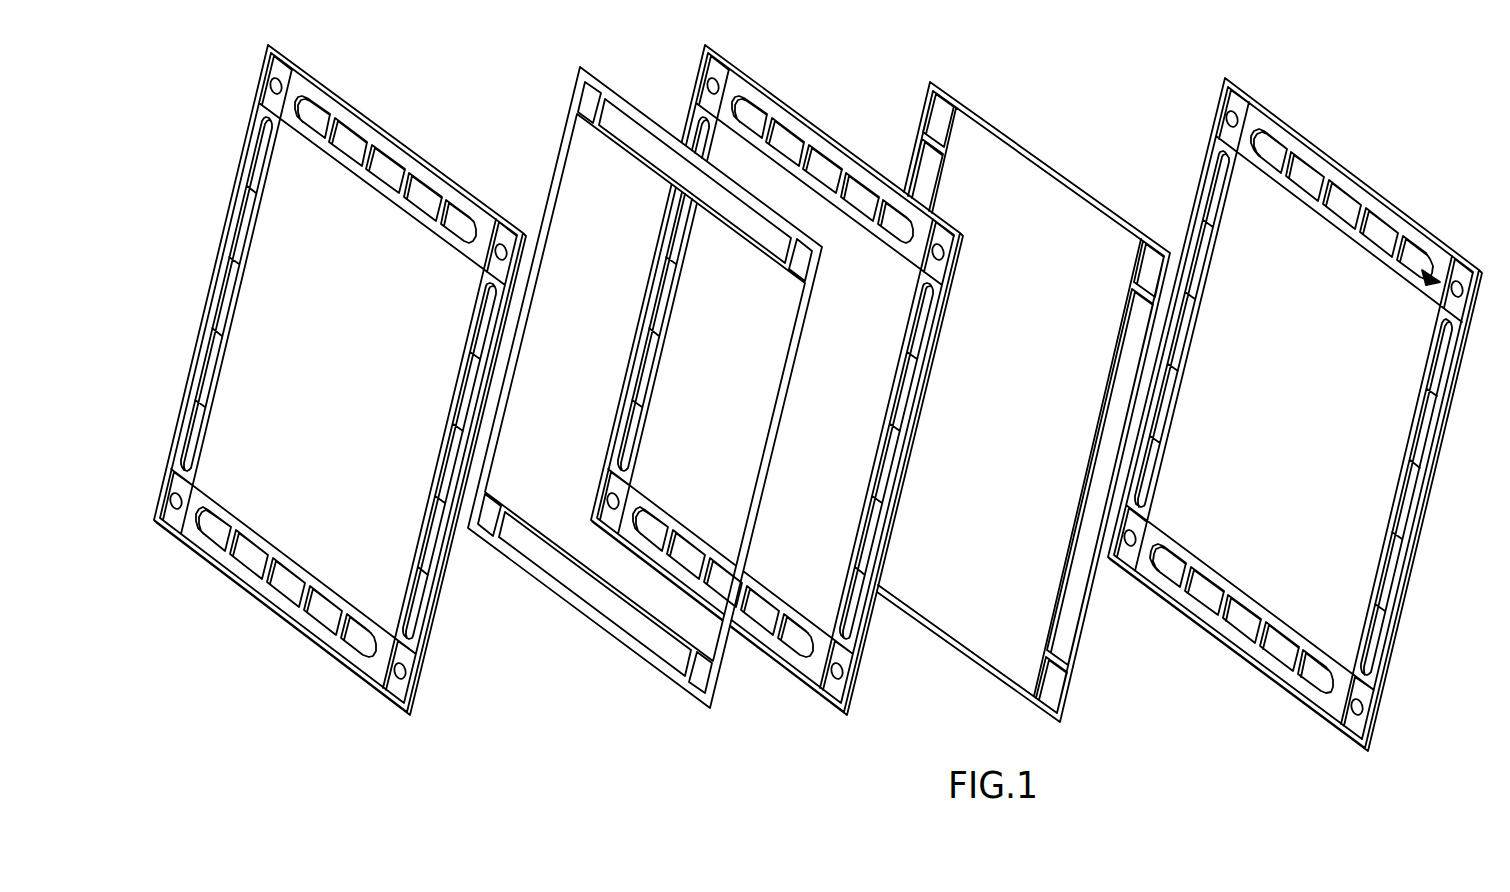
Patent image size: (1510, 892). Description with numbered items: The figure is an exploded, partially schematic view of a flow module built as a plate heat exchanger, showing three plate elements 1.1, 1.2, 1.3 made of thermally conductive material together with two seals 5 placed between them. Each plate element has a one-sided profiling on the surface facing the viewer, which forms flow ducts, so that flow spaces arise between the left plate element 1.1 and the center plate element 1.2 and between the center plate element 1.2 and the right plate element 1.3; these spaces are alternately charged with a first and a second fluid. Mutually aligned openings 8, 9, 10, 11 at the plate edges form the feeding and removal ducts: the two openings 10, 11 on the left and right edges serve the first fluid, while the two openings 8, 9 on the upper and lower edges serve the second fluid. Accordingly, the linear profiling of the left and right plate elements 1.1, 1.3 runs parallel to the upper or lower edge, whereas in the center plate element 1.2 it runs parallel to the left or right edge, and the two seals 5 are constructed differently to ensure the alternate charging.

The left plate element 1.1 is at (333, 82).
The center plate element 1.2 is at (762, 80).
The right plate element 1.3 is at (1266, 103).
The seal 5 is at (597, 78).
The opening 8 is at (387, 167).
The opening 9 is at (287, 582).
The opening 10 is at (413, 606).
The opening 11 is at (250, 220).